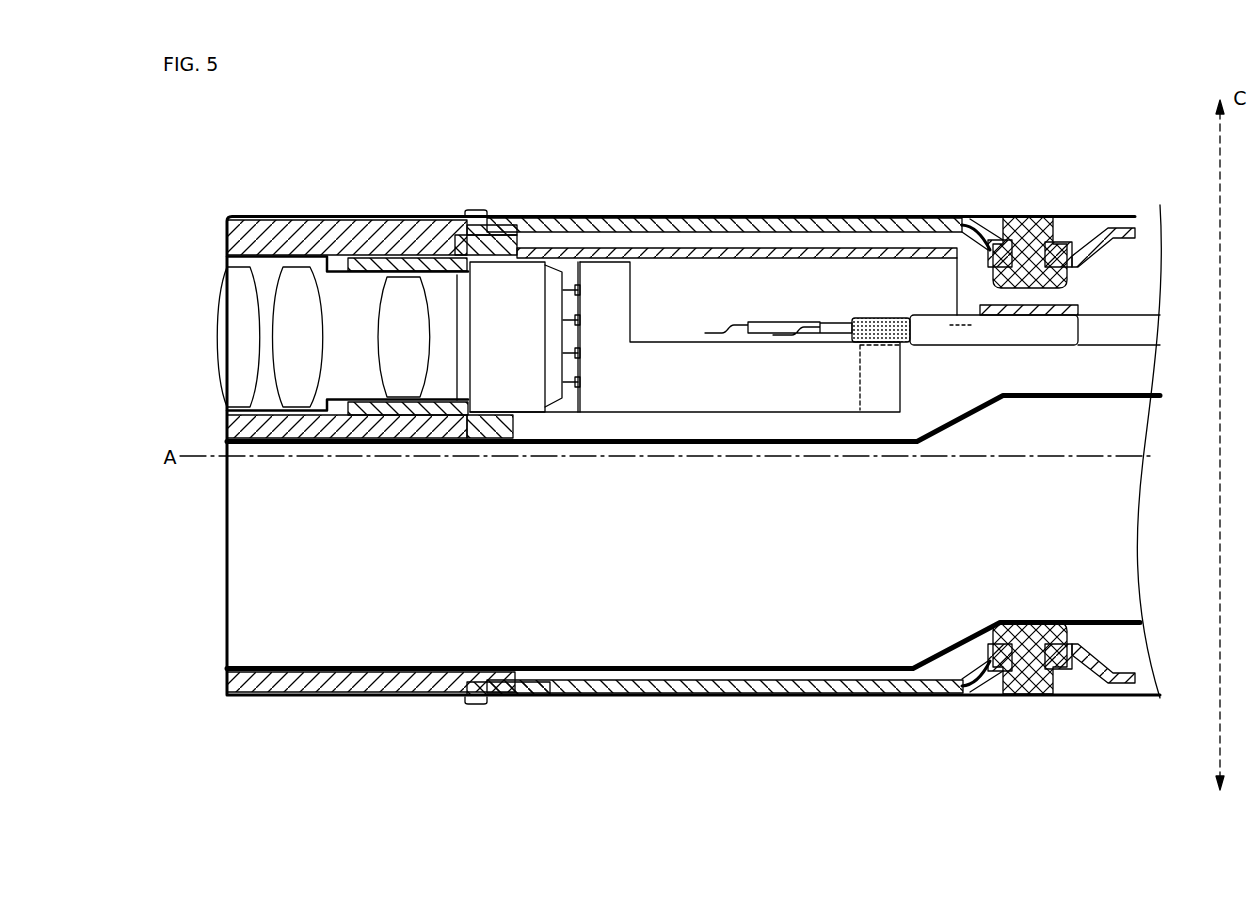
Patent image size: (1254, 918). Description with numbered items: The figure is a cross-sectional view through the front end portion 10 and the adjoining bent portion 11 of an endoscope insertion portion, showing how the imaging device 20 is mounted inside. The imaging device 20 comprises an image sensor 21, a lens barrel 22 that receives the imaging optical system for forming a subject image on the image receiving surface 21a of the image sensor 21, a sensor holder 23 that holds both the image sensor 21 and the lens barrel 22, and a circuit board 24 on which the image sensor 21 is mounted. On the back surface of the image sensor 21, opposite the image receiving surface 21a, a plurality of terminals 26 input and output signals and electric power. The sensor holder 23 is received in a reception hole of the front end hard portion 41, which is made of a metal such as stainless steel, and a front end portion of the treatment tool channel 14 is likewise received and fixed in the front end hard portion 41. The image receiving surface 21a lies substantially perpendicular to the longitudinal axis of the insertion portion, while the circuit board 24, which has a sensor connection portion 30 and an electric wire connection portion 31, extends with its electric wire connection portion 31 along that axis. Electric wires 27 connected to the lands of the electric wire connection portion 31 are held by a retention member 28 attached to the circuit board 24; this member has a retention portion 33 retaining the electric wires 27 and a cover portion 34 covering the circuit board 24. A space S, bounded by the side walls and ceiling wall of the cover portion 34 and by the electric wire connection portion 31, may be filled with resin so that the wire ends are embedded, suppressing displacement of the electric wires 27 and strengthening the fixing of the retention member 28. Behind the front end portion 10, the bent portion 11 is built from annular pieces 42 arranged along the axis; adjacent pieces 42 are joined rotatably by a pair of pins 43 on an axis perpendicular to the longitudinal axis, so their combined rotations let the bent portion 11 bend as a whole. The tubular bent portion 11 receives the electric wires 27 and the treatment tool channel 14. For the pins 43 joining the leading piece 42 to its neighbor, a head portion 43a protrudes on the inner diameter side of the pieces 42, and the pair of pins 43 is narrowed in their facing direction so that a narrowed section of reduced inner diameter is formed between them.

The front end portion 10 is at (234, 212).
The bent portion 11 is at (1133, 699).
The treatment tool channel 14 is at (252, 575).
The imaging device 20 is at (597, 137).
The image sensor 21 is at (507, 432).
The image receiving surface 21a is at (450, 222).
The lens barrel 22 is at (297, 257).
The sensor holder 23 is at (408, 285).
The circuit board 24 is at (575, 174).
The terminals 26 is at (540, 216).
The electric wires 27 is at (783, 323).
The retention member 28 is at (940, 144).
The sensor connection portion 30 is at (583, 248).
The electric wire connection portion 31 is at (680, 342).
The retention portion 33 is at (958, 238).
The cover portion 34 is at (898, 247).
The front end hard portion 41 is at (268, 237).
The annular pieces 42 is at (700, 222).
The pins 43 is at (1020, 232).
The head portion 43a is at (996, 242).
The space S is at (834, 287).